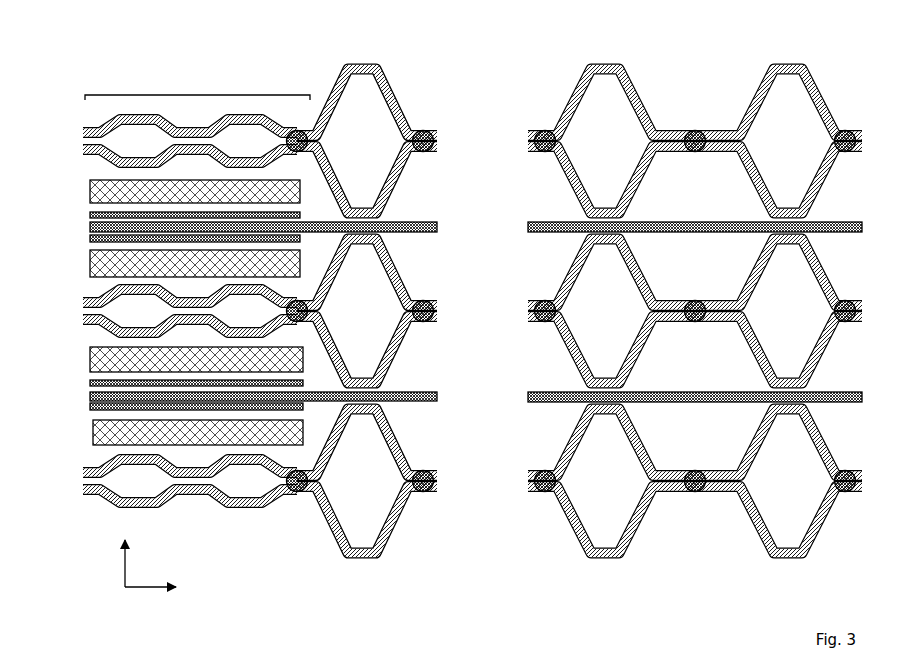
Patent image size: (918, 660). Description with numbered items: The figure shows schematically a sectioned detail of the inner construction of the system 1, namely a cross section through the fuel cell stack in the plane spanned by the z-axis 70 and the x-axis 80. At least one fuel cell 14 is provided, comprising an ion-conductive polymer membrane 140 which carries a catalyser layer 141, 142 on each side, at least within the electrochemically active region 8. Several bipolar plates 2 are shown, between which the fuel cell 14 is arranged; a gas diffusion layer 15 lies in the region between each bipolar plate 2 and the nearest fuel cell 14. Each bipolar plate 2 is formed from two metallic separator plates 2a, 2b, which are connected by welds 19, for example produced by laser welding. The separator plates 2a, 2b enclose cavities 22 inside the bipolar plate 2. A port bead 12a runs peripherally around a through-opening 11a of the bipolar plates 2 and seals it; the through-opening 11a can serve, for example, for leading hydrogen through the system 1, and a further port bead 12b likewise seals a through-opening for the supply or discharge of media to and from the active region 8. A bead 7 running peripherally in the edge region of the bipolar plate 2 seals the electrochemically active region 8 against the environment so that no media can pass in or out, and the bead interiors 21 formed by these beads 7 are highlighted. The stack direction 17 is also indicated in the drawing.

The system 1 is at (65, 105).
The stack direction 17 is at (103, 78).
The electrochemically active region 8 is at (197, 88).
The cavity 22 is at (125, 142).
The gas diffusion layer 15 is at (92, 191).
The cell 14 is at (90, 212).
The catalyser layer 141 is at (90, 383).
The ion-conductive polymer membrane 140 is at (90, 396).
The catalyser layer 142 is at (90, 407).
The port bead 12a is at (388, 92).
The separator plate 2a is at (485, 264).
The separator plate 2b is at (495, 352).
The port bead 12b is at (396, 185).
The weld 19 is at (433, 139).
The through-opening 11a is at (483, 240).
The bipolar plate 2 is at (712, 312).
The bead 7 is at (815, 99).
The bead interior 21 is at (784, 311).
The z-axis 70 is at (122, 565).
The x-axis 80 is at (140, 590).